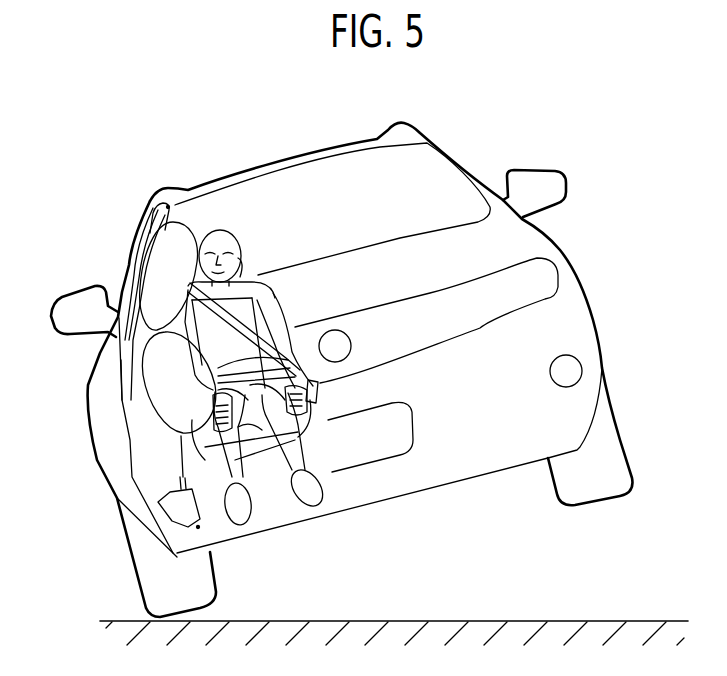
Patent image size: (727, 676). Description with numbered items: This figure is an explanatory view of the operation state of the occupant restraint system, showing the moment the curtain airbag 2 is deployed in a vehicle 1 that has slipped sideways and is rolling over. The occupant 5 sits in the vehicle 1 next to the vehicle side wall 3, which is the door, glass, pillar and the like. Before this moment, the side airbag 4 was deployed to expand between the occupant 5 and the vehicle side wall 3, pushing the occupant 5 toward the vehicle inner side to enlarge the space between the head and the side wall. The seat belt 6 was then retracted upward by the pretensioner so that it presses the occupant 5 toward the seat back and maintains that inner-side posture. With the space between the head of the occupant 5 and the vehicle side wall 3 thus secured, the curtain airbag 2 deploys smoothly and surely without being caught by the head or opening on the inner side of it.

The vehicle 1 is at (280, 157).
The curtain airbag 2 is at (163, 270).
The vehicle side wall 3 is at (140, 417).
The side airbag 4 is at (163, 370).
The occupant 5 is at (233, 234).
The seat belt 6 is at (273, 307).